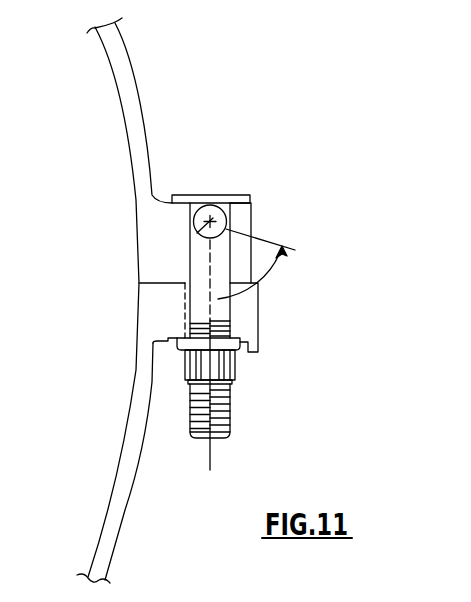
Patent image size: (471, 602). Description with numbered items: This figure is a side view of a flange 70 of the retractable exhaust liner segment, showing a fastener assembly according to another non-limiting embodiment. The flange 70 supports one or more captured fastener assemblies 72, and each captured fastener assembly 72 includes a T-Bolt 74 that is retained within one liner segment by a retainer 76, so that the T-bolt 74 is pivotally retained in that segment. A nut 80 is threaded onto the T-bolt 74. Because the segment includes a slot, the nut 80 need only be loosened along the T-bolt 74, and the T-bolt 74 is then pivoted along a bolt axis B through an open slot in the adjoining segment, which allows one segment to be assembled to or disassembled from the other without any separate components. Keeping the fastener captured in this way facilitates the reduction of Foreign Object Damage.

The flange 70 is at (297, 215).
The captured fastener assembly 72 is at (228, 392).
The T-Bolt 74 is at (199, 209).
The retainer 76 is at (186, 194).
The nut 80 is at (186, 368).
The bolt axis B is at (197, 233).